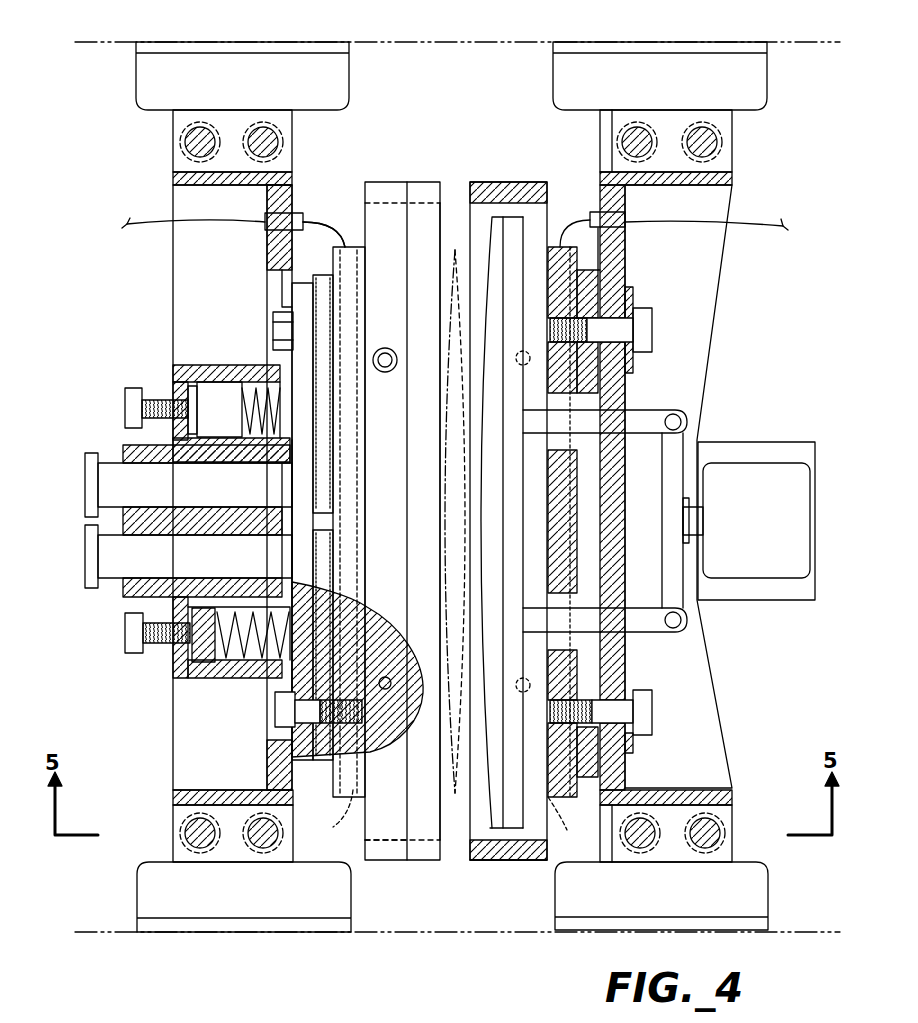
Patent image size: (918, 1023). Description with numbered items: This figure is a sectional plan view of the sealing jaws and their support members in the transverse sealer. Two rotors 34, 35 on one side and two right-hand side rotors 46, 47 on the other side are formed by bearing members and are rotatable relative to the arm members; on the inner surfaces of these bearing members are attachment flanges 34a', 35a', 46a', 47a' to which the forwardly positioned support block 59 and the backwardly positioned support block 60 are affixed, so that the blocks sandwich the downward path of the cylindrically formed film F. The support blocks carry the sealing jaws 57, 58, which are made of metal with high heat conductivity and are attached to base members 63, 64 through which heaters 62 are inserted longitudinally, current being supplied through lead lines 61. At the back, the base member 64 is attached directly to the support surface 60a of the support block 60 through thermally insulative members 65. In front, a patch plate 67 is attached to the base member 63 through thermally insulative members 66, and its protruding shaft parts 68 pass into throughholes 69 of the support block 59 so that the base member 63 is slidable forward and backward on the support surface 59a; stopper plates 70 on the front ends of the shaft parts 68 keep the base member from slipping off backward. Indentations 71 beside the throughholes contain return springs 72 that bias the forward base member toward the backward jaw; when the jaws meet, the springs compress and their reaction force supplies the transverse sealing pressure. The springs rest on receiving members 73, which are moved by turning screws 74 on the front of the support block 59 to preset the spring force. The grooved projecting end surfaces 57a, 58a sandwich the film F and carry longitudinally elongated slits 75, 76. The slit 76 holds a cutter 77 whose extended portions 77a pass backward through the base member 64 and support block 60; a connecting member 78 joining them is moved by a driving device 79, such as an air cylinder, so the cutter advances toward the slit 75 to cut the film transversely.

The rotor 34 is at (134, 864).
The rotor 35 is at (772, 862).
The attachment flange 34a' is at (194, 830).
The attachment flange 35a' is at (707, 830).
The right-hand side rotor 46 is at (132, 80).
The right-hand side rotor 47 is at (772, 80).
The attachment flange 46a' is at (190, 141).
The attachment flange 47a' is at (706, 141).
The sealing jaw 57 is at (382, 178).
The projecting end surface 57a is at (441, 215).
The sealing jaw 58 is at (513, 178).
The projecting end surface 58a is at (490, 843).
The support block 59 is at (172, 292).
The support surface 59a is at (292, 190).
The support block 60 is at (714, 322).
The support surface 60a is at (600, 185).
The lead line 61 is at (150, 222).
The heater 62 is at (451, 816).
The base member 63 is at (383, 260).
The base member 64 is at (553, 262).
The thermally insulative member 65 is at (590, 286).
The thermally insulative member 66 is at (328, 535).
The patch plate 67 is at (302, 307).
The protruding shaft part 68 is at (108, 480).
The throughhole 69 is at (123, 455).
The stopper plate 70 is at (88, 553).
The indentation 71 is at (178, 385).
The return spring 72 is at (260, 372).
The receiving member 73 is at (222, 395).
The screw 74 is at (125, 410).
The slit 75 is at (380, 850).
The slit 76 is at (548, 855).
The cutter 77 is at (497, 213).
The extended portion 77a is at (635, 428).
The connecting member 78 is at (668, 583).
The driving device 79 is at (800, 517).
The film F is at (452, 770).